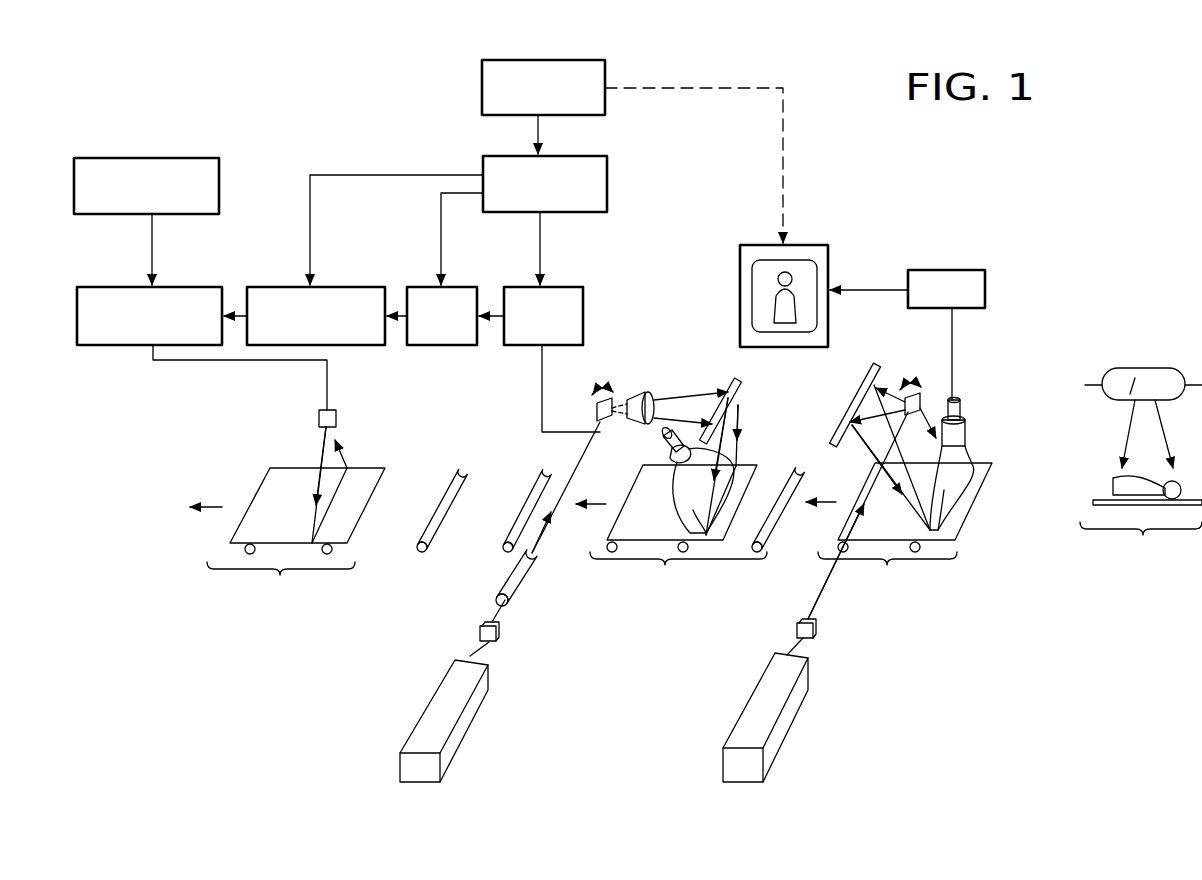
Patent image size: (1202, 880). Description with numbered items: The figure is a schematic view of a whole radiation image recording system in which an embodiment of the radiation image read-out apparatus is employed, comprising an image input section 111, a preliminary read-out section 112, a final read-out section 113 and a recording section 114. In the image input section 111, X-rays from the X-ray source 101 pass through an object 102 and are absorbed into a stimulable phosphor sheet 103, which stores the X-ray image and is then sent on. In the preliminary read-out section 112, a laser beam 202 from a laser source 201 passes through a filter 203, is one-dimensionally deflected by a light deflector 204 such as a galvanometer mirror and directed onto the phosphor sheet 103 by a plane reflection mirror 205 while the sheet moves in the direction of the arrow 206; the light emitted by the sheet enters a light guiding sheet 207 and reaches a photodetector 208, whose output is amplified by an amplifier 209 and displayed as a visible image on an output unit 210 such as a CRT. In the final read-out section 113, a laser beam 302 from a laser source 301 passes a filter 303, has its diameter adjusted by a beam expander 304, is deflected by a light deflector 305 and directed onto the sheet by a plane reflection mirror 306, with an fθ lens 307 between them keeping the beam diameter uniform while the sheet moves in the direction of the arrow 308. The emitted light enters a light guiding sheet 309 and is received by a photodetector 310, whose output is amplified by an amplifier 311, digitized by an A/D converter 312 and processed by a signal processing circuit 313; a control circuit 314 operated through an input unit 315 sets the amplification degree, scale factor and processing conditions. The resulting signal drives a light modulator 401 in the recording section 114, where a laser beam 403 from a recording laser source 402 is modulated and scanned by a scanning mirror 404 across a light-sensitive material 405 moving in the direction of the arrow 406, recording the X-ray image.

The X-ray source 101 is at (1160, 368).
The object 102 is at (1118, 478).
The stimulable phosphor sheet 103 is at (1093, 503).
The image input section 111 is at (1141, 544).
The preliminary read-out section 112 is at (905, 531).
The final read-out section 113 is at (678, 532).
The recording section 114 is at (296, 539).
The laser source 201 is at (780, 720).
The laser beam 202 is at (796, 648).
The filter 203 is at (816, 628).
The light deflector 204 is at (905, 396).
The plane reflection mirror 205 is at (872, 364).
The arrow 206 is at (830, 502).
The light guiding sheet 207 is at (957, 455).
The photodetector 208 is at (961, 406).
The amplifier 209 is at (951, 269).
The output unit 210 is at (816, 245).
The laser source 301 is at (466, 722).
The laser beam 302 is at (482, 653).
The filter 303 is at (499, 632).
The beam expander 304 is at (520, 582).
The light deflector 305 is at (616, 398).
The plane reflection mirror 306 is at (739, 383).
The fθ lens 307 is at (657, 394).
The arrow 308 is at (600, 504).
The light guiding sheet 309 is at (718, 456).
The photodetector 310 is at (664, 446).
The amplifier 311 is at (522, 346).
The A/D converter 312 is at (448, 346).
The signal processing circuit 313 is at (362, 346).
The control circuit 314 is at (553, 156).
The input unit 315 is at (481, 97).
The light modulator 401 is at (124, 346).
The recording laser source 402 is at (206, 158).
The laser beam 403 is at (153, 245).
The scanning mirror 404 is at (318, 418).
The light-sensitive material 405 is at (365, 480).
The arrow 406 is at (214, 506).